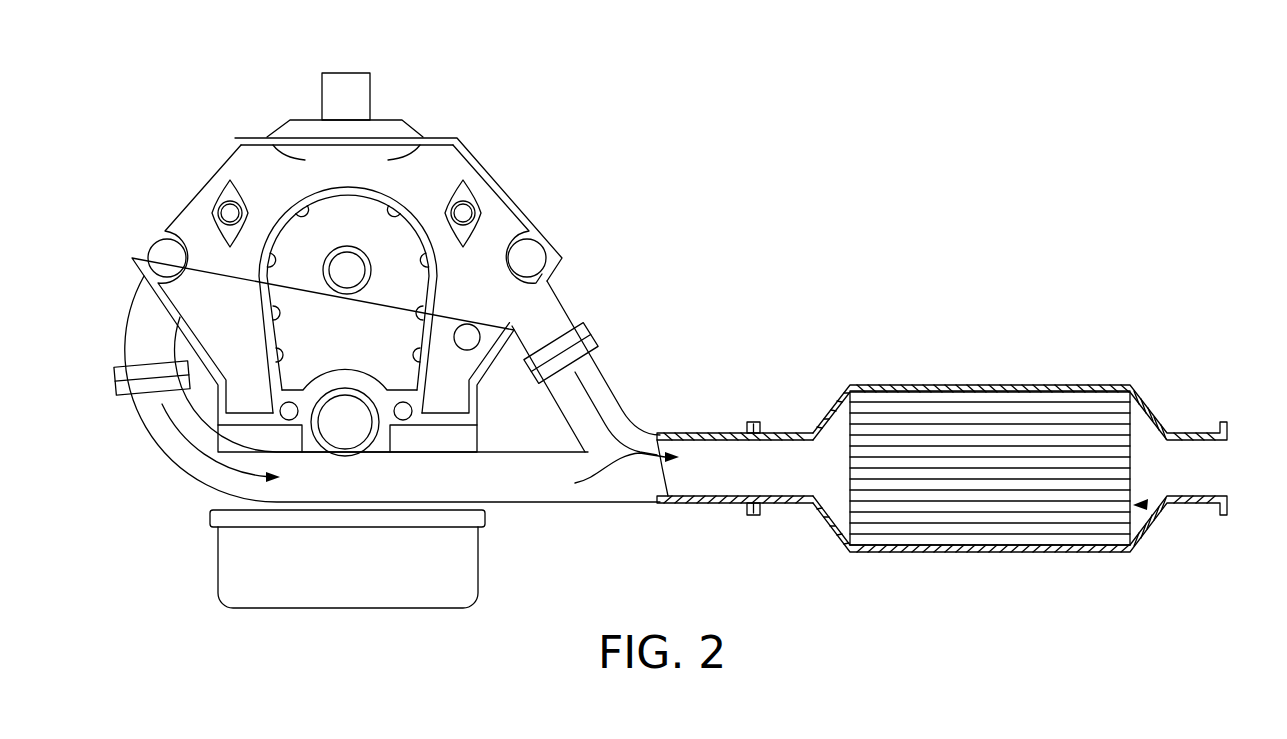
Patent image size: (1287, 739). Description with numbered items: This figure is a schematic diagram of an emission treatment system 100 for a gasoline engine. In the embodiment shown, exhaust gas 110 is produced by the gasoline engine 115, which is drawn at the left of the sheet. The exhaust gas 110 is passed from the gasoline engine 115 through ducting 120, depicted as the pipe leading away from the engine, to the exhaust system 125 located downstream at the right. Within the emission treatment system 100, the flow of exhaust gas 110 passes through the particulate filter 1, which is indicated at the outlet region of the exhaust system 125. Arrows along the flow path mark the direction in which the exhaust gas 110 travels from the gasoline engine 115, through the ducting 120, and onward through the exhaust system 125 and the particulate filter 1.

The emission treatment system 100 is at (947, 288).
The exhaust gas 110 is at (190, 462).
The gasoline engine 115 is at (230, 142).
The ducting 120 is at (495, 504).
The exhaust system 125 is at (826, 527).
The particulate filter 1 is at (1146, 506).